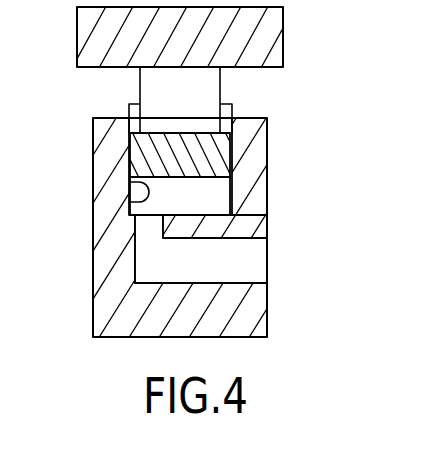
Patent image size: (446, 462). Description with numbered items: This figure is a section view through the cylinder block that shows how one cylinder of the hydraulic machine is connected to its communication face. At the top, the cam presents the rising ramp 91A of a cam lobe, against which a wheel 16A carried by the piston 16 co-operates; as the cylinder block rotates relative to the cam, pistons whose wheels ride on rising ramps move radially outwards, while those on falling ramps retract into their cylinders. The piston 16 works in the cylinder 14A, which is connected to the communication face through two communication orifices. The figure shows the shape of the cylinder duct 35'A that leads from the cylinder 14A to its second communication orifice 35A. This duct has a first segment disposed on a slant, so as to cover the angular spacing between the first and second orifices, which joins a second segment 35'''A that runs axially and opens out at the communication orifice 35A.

The rising ramp 91A is at (258, 68).
The wheel 16A is at (157, 89).
The piston 16 is at (150, 153).
The cylinder 14A is at (130, 185).
The cylinder duct 35'A is at (61, 249).
The second segment 35'''A is at (266, 236).
The second communication orifice 35A is at (268, 270).